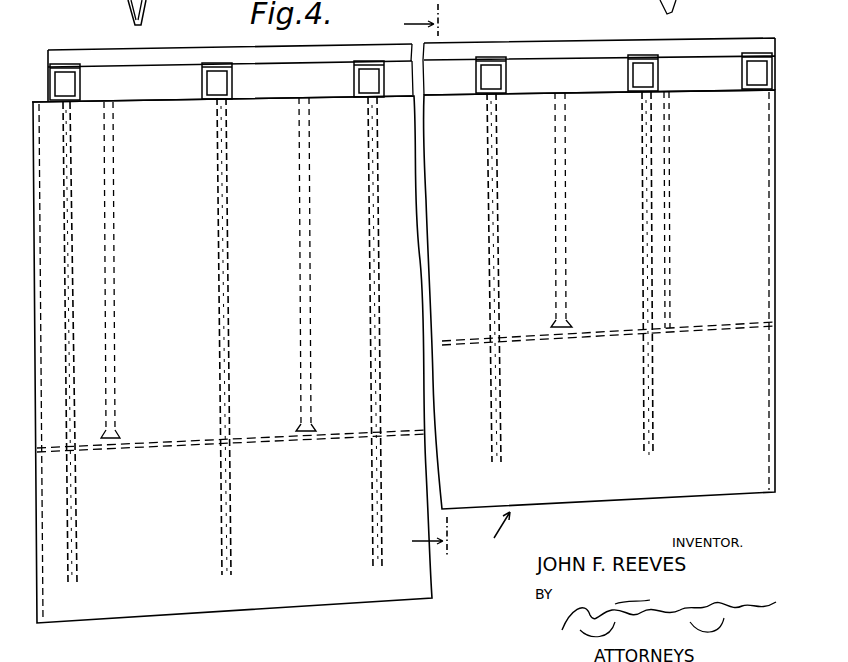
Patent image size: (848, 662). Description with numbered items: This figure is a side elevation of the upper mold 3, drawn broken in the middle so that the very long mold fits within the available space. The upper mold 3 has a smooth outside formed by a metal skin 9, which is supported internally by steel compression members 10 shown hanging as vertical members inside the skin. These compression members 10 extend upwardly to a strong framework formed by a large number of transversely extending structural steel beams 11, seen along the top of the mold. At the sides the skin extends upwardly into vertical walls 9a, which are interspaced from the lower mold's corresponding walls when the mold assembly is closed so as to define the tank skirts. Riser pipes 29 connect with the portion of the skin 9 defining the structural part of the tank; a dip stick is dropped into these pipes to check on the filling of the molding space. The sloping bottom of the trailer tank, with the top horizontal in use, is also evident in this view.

The upper mold 3 is at (457, 286).
The metal skin 9 is at (38, 554).
The vertical wall 9a is at (33, 182).
The steel compression member 10 is at (222, 285).
The structural steel beam 11 is at (202, 77).
The riser pipe 29 is at (112, 266).